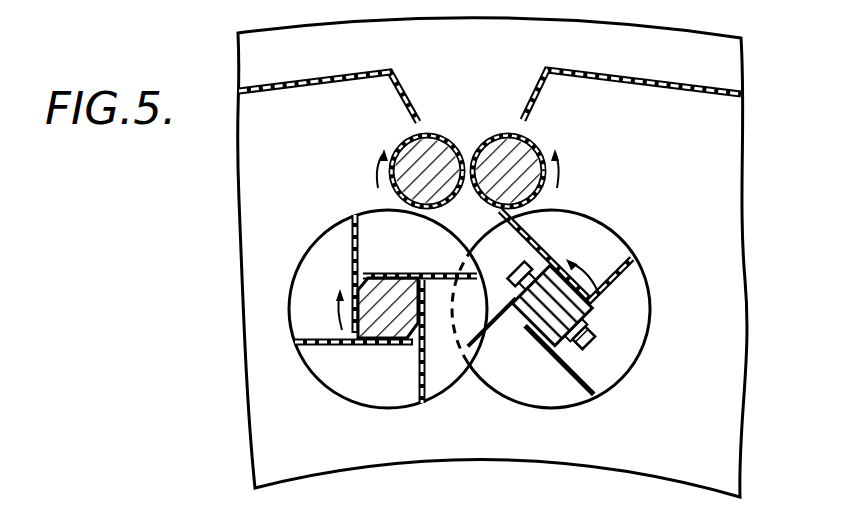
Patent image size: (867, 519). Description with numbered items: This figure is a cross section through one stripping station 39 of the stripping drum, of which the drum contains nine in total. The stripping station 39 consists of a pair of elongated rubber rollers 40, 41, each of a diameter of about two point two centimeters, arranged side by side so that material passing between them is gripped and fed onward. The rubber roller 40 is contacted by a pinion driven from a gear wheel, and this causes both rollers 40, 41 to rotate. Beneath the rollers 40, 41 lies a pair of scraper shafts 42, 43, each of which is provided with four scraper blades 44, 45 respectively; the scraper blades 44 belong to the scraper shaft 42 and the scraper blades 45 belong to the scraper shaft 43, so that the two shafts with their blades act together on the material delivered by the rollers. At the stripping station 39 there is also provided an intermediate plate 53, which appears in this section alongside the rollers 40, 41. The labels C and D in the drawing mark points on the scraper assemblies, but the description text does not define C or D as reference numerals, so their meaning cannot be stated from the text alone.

The stripping station 39 is at (448, 96).
The intermediate plate 53 is at (642, 76).
The rubber roller 40 is at (401, 146).
The rubber roller 41 is at (535, 146).
The scraper blades 44 is at (352, 246).
The scraper blades 45 is at (649, 286).
The scraper shaft 42 is at (384, 335).
The scraper shaft 43 is at (535, 330).
The cutting edge C is at (528, 200).
The cutting edge D is at (552, 306).